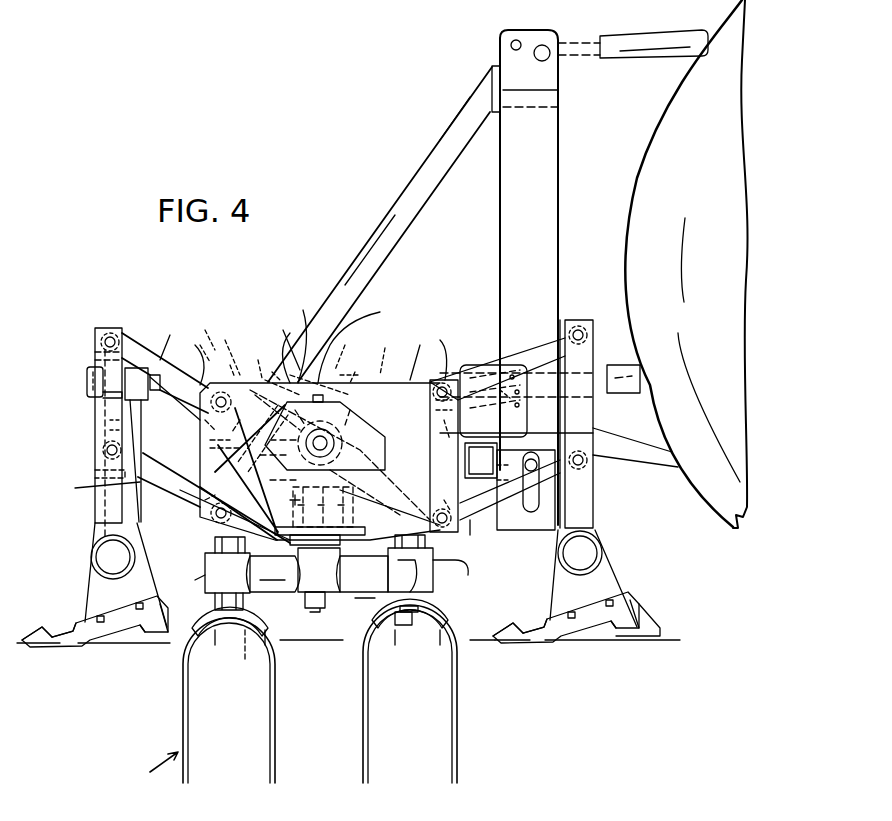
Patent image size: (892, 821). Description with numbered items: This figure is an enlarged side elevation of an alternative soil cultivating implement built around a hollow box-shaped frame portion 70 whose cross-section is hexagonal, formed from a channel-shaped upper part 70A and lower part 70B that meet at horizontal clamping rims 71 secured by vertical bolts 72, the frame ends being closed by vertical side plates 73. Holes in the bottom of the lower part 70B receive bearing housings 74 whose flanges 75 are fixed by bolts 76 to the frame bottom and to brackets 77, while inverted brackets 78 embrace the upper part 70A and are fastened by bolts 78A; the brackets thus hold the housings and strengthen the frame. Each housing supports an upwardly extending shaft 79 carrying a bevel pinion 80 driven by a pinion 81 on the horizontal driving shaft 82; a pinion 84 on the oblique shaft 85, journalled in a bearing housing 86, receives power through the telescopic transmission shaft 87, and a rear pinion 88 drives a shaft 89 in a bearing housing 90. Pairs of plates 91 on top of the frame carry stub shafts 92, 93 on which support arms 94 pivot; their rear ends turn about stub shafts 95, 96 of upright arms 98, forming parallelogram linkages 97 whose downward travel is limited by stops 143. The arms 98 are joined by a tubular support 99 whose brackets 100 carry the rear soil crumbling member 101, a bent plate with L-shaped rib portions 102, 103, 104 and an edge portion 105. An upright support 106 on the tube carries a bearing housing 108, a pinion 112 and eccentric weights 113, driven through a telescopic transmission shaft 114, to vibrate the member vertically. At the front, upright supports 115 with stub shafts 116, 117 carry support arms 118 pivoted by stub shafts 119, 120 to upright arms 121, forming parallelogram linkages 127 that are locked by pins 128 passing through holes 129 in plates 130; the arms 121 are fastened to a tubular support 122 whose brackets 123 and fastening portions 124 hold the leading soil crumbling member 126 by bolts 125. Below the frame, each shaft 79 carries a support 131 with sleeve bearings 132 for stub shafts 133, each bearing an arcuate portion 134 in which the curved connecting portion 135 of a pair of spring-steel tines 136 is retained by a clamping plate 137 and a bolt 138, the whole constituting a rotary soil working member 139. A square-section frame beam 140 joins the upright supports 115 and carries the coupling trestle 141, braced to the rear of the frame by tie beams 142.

The hollow box-shaped frame portion 70 is at (320, 496).
The upper part 70A is at (252, 380).
The lower part 70B is at (182, 578).
The clamping rims 71 is at (190, 470).
The bolts 72 is at (380, 430).
The side plates 73 is at (390, 513).
The bearing housings 74 is at (340, 458).
The flanges 75 is at (345, 497).
The bolts 76 is at (319, 580).
The brackets 77 is at (274, 574).
The brackets 78 is at (286, 347).
The bolts 78A is at (368, 339).
The shaft 79 is at (286, 502).
The bevel pinions 80 is at (320, 442).
The bevel pinions 81 is at (350, 348).
The driving shaft 82 is at (353, 368).
The bevel pinion 84 is at (387, 351).
The shaft 85 is at (419, 442).
The bearing housing 86 is at (434, 398).
The intermediate telescopic transmission shaft 87 is at (686, 264).
The bevel pinion 88 is at (305, 373).
The shaft 89 is at (199, 334).
The bearing housing 90 is at (225, 349).
The plates 91 is at (297, 336).
The upper stub shaft 92 is at (184, 356).
The lower stub shaft 93 is at (200, 545).
The support arms 94 is at (111, 403).
The upper stub shaft 95 is at (110, 330).
The lower stub shaft 96 is at (106, 452).
The parallelogram linkages 97 is at (140, 340).
The upright arms 98 is at (120, 522).
The tubular support 99 is at (92, 560).
The brackets 100 is at (90, 605).
The rear soil crumbling member 101 is at (92, 642).
The rib portion 102 is at (605, 628).
The rib portion 103 is at (540, 640).
The rib portion 104 is at (505, 642).
The edge portion 105 is at (160, 660).
The upright support 106 is at (120, 430).
The bearing housing 108 is at (125, 395).
The pinion 112 is at (92, 356).
The weights 113 is at (86, 378).
The telescopic transmission shaft 114 is at (162, 396).
The upright supports 115 is at (469, 574).
The upper stub shaft 116 is at (455, 375).
The lower stub shaft 117 is at (455, 532).
The support arms 118 is at (538, 340).
The upper stub shaft 119 is at (578, 325).
The lower stub shaft 120 is at (603, 446).
The upright arms 121 is at (598, 412).
The tubular support 122 is at (600, 545).
The brackets 123 is at (600, 575).
The fastening portions 124 is at (548, 615).
The bolts 125 is at (588, 600).
The leading soil crumbling member 126 is at (648, 627).
The parallelogram linkages 127 is at (515, 532).
The locking pins 128 is at (525, 360).
The holes 129 is at (493, 401).
The plates 130 is at (500, 360).
The supports 131 is at (360, 595).
The bearings 132 is at (440, 588).
The stub shafts 133 is at (385, 574).
The arcuate portion 134 is at (268, 618).
The connecting portion 135 is at (420, 620).
The tines 136 is at (190, 720).
The clamping plate 137 is at (230, 645).
The bolt 138 is at (418, 640).
The rotary soil working member 139 is at (149, 774).
The frame beam 140 is at (478, 515).
The coupling member or trestle 141 is at (558, 145).
The tie beams 142 is at (465, 110).
The stops 143 is at (275, 530).